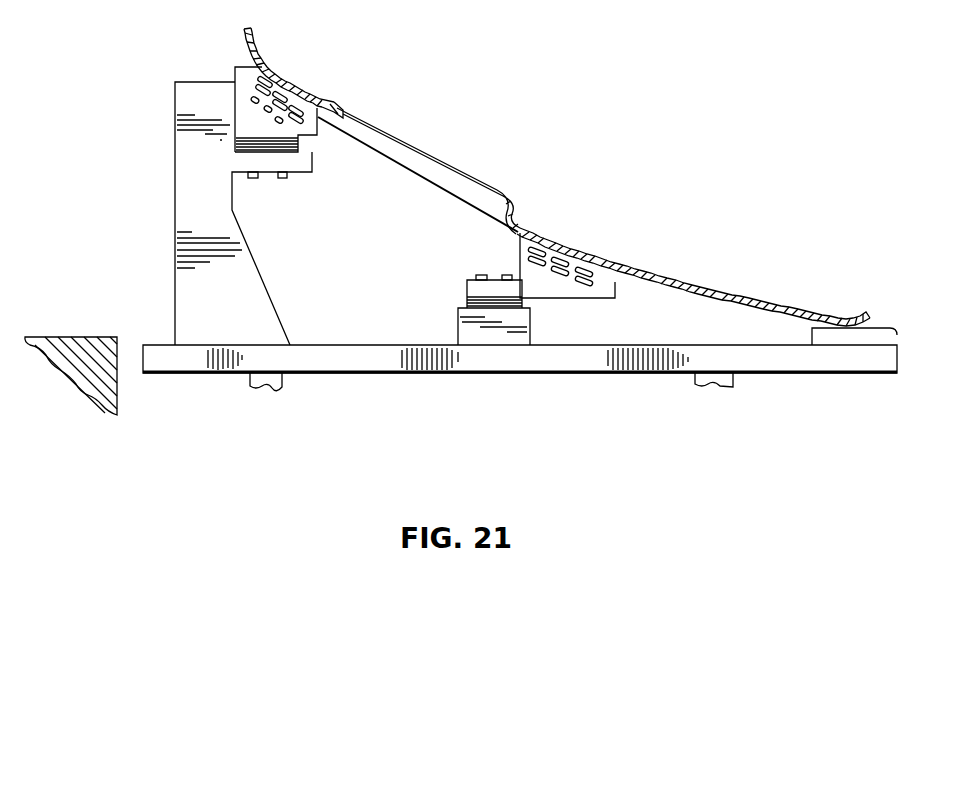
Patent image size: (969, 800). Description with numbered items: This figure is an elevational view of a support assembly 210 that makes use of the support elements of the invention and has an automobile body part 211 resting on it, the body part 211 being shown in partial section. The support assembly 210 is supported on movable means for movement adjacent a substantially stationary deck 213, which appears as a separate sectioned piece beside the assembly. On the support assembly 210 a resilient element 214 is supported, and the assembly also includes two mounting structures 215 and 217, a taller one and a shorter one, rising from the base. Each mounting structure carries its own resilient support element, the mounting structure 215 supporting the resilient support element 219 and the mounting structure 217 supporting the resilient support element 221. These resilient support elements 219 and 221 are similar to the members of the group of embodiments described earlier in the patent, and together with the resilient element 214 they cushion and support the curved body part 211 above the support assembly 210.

The support assembly 210 is at (388, 363).
The automobile body part 211 is at (673, 283).
The substantially stationary deck 213 is at (82, 347).
The resilient element 214 is at (872, 333).
The mounting structure 215 is at (190, 205).
The mounting structure 217 is at (503, 335).
The resilient support element 219 is at (242, 78).
The resilient support element 221 is at (601, 287).